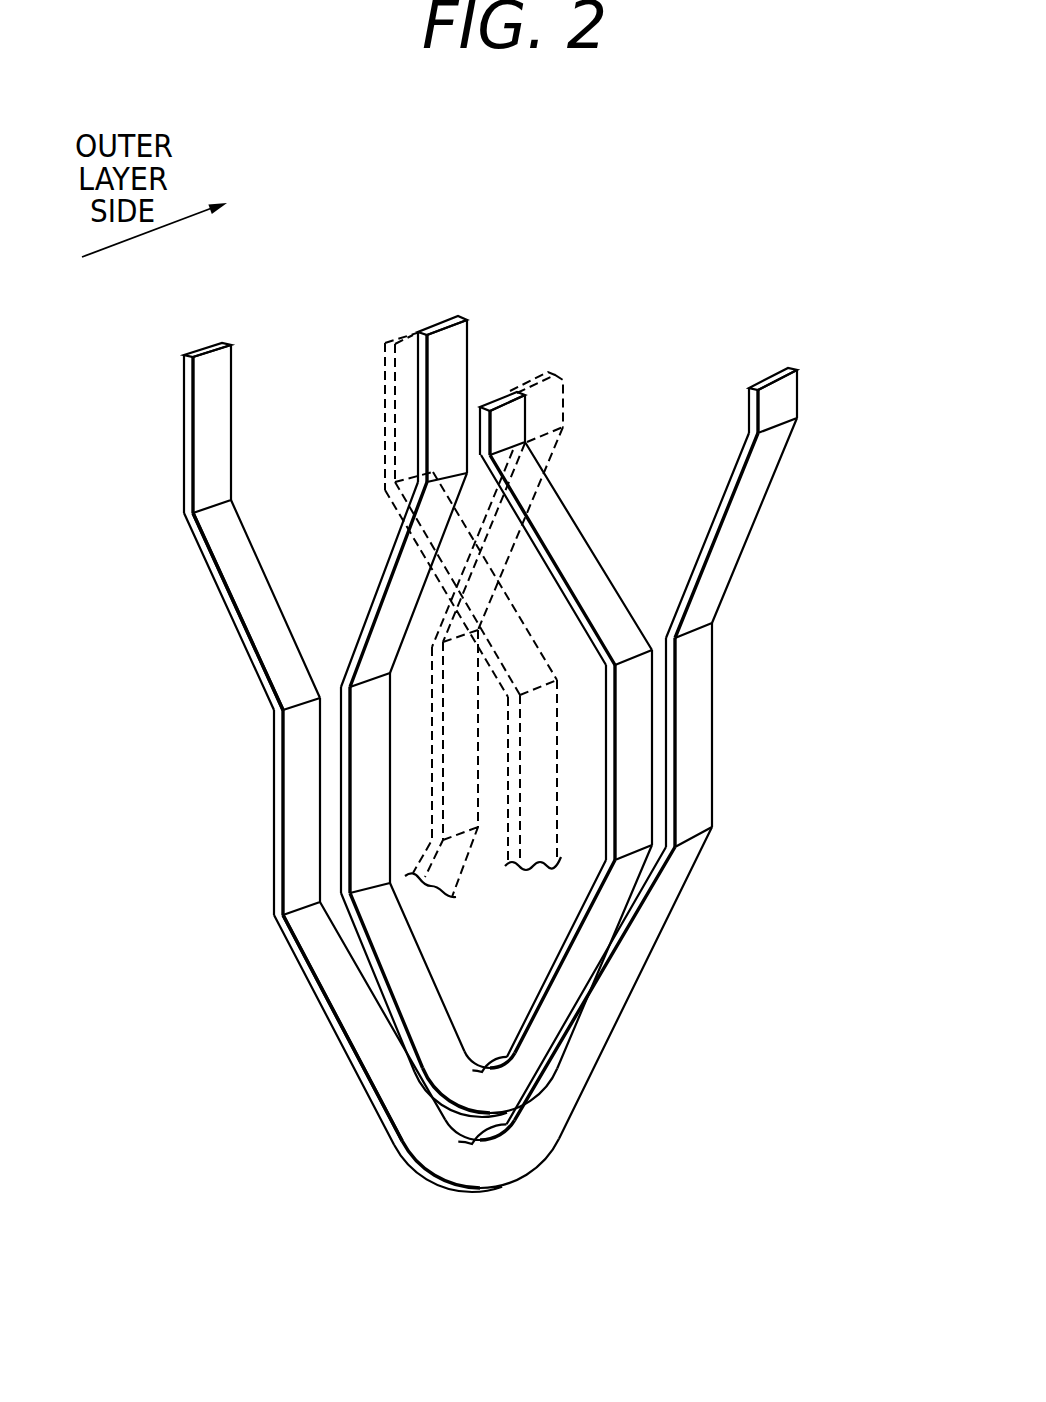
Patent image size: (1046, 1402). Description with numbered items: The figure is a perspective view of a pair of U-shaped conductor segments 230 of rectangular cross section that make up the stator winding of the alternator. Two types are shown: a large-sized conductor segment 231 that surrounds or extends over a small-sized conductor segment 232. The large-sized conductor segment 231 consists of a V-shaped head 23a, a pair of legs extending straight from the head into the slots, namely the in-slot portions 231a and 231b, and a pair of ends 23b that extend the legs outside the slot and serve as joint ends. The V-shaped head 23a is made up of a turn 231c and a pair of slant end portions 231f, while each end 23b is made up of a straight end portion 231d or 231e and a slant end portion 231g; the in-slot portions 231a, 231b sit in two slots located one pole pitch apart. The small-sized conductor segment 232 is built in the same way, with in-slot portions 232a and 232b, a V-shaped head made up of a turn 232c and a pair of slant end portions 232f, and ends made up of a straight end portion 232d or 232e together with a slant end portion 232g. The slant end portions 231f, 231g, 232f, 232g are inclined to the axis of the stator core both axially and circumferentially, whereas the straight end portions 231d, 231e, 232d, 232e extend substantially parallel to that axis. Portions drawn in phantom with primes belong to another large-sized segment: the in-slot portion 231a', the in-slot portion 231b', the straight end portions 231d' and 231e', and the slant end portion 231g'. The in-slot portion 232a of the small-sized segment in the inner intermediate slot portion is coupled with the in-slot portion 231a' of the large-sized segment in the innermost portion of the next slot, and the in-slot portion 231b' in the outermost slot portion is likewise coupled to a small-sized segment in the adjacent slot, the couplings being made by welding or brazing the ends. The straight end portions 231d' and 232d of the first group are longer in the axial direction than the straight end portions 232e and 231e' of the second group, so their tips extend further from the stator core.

The conductor segment 230 is at (322, 1147).
The large-sized conductor segment 231 is at (771, 527).
The small-sized conductor segment 232 is at (655, 565).
The V-shaped head 23a is at (306, 1078).
The end 23b is at (214, 674).
The in-slot portion 231a is at (230, 806).
The in-slot portion 231b is at (759, 735).
The turn 231c is at (467, 1158).
The straight end portion 231d is at (145, 428).
The straight end portion 231e is at (844, 372).
The slant end portion 231f is at (322, 975).
The slant end portion 231g is at (495, 564).
The in-slot portion 232a is at (377, 837).
The in-slot portion 232b is at (638, 810).
The turn 232c is at (495, 1093).
The straight end portion 232d is at (445, 337).
The straight end portion 232e is at (505, 417).
The slant end portion 232f is at (585, 943).
The slant end portion 232g is at (381, 592).
The in-slot portion 231a' is at (697, 816).
The in-slot portion 231b' is at (644, 763).
The straight end portion 231d' is at (355, 379).
The straight end portion 231e' is at (570, 351).
The slant end portion 231g' is at (640, 562).